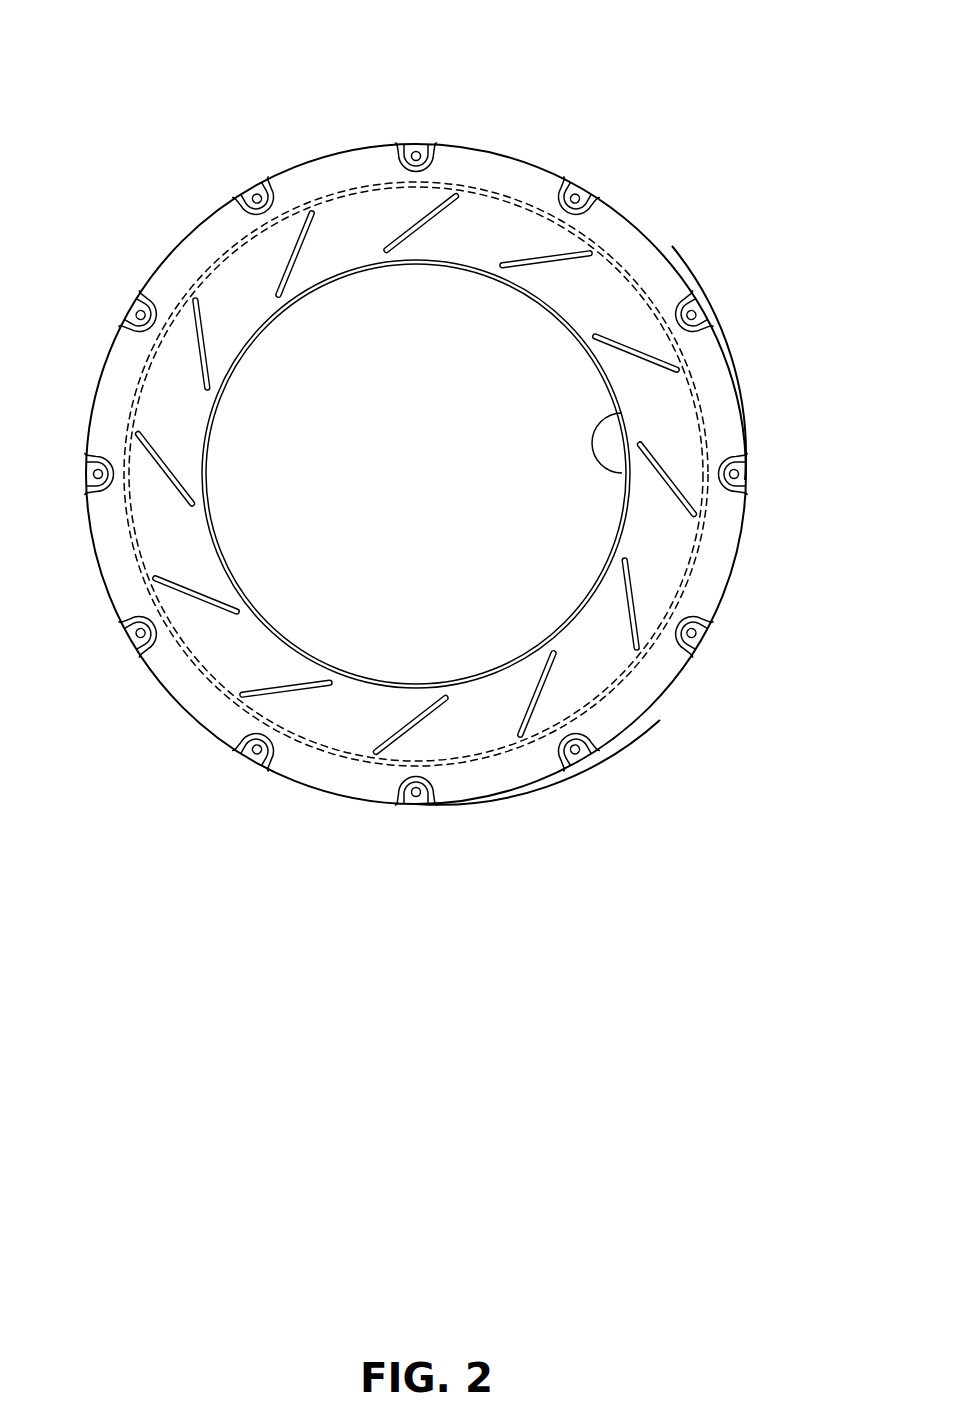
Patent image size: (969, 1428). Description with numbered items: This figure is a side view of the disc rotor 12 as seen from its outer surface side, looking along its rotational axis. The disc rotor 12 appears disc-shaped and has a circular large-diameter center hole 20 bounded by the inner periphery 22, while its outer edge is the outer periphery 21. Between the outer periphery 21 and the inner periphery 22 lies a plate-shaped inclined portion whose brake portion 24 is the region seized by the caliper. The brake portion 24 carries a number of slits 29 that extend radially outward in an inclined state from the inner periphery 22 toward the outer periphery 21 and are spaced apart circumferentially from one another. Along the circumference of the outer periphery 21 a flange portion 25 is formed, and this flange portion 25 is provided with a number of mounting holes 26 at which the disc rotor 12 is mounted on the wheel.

The disc rotor 12 is at (555, 112).
The center hole 20 is at (517, 350).
The outer periphery 21 is at (733, 577).
The inner periphery 22 is at (622, 413).
The brake portion 24 is at (598, 677).
The flange portion 25 is at (505, 780).
The mounting holes 26 is at (417, 792).
The slits 29 is at (287, 268).